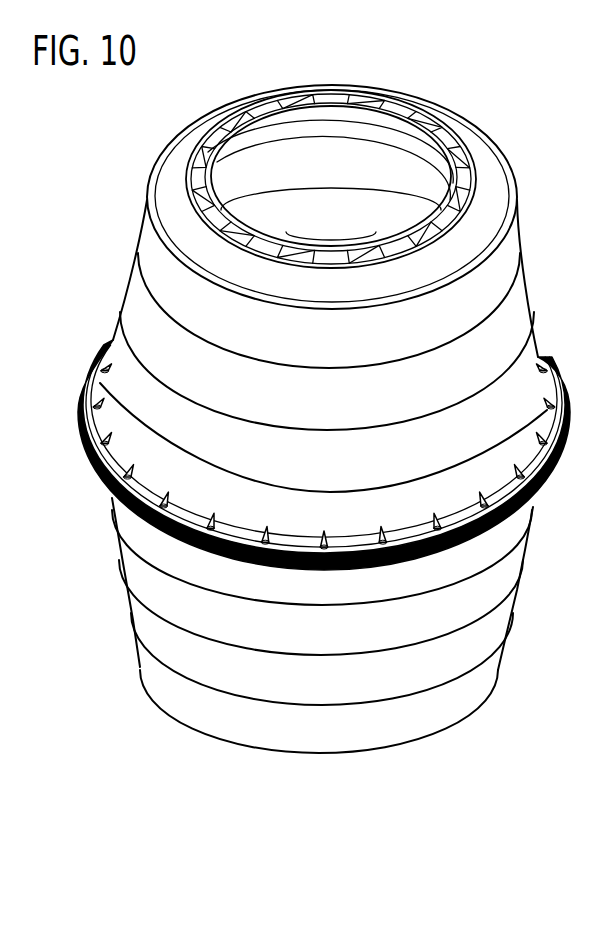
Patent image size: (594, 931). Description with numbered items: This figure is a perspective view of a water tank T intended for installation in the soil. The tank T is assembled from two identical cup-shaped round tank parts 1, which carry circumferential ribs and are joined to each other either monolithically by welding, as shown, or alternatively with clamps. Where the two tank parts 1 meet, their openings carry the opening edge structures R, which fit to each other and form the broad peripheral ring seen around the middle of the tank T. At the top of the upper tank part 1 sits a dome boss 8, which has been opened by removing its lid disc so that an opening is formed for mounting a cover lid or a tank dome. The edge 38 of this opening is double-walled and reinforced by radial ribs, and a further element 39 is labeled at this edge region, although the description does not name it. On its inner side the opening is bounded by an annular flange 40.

The tank part 1 is at (518, 297).
The dome boss 8 is at (382, 270).
The edge 38 is at (280, 250).
The bearing cage 39 is at (242, 221).
The annular flange 40 is at (304, 115).
The opening edge structure R is at (555, 381).
The water tank T is at (530, 170).